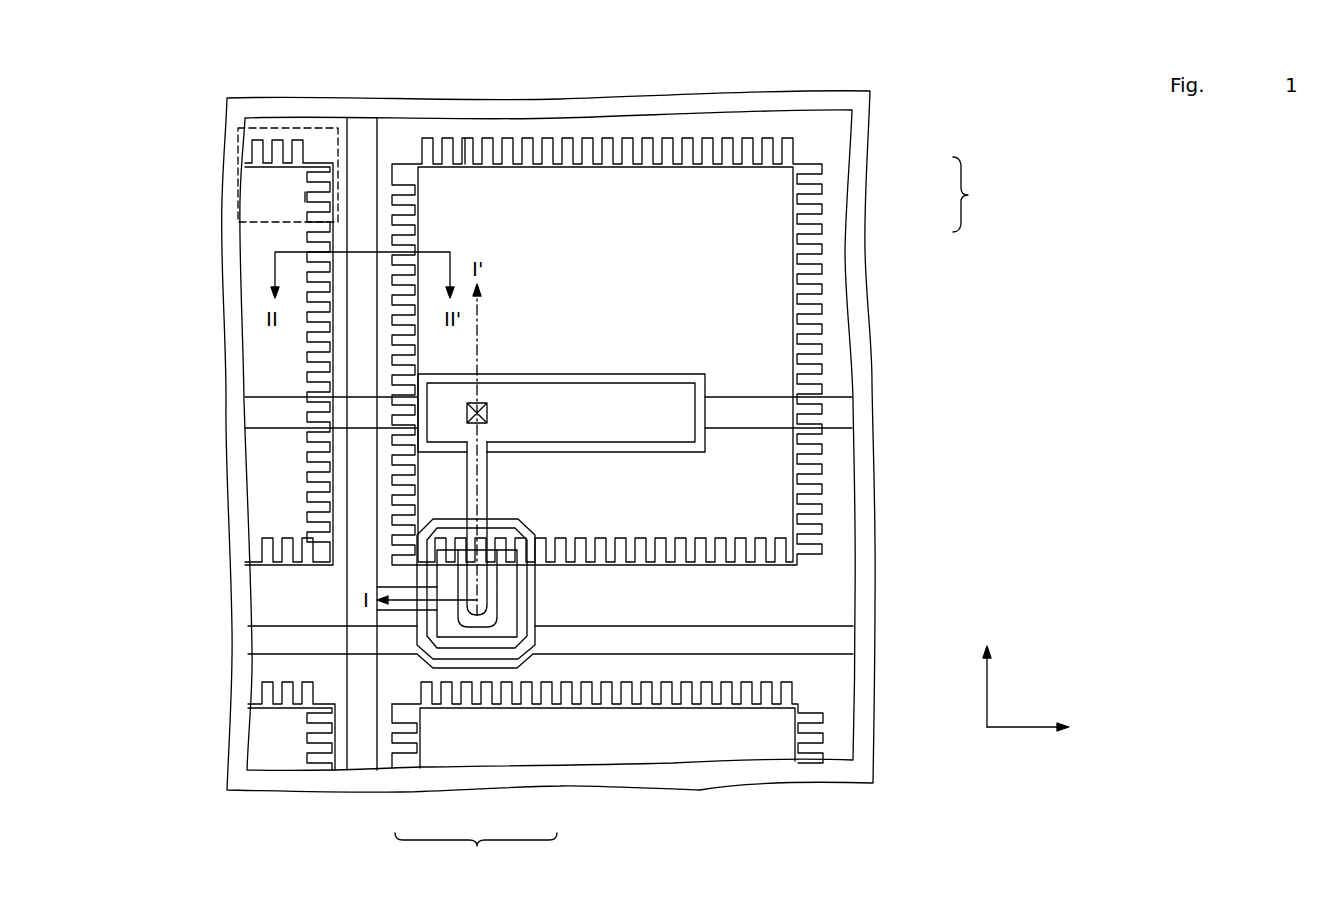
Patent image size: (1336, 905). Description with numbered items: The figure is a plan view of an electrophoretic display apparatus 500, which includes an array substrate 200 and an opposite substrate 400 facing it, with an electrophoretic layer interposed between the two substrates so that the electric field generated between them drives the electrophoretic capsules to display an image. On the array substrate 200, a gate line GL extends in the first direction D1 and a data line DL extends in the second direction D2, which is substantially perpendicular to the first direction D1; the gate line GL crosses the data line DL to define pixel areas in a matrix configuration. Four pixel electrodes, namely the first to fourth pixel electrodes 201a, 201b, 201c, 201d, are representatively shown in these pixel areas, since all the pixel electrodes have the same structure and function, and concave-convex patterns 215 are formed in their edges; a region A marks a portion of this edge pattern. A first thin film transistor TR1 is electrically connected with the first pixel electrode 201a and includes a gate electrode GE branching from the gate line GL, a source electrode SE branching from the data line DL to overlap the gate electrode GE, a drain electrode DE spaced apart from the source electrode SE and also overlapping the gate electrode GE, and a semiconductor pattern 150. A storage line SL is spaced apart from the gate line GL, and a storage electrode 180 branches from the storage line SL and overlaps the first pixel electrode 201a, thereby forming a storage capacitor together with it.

The electrophoretic display apparatus 500 is at (984, 194).
The opposite substrate 400 is at (872, 163).
The array substrate 200 is at (850, 218).
The first pixel electrode 201a is at (563, 140).
The second pixel electrode 201b is at (278, 140).
The third pixel electrode 201c is at (807, 762).
The fourth pixel electrode 201d is at (318, 770).
The concave-convex pattern 215 is at (466, 128).
The region A is at (331, 128).
The data line DL is at (362, 137).
The gate line GL is at (270, 643).
The storage line SL is at (835, 410).
The storage electrode 180 is at (620, 373).
The gate electrode GE is at (450, 670).
The source electrode SE is at (487, 650).
The drain electrode DE is at (478, 620).
The semiconductor pattern 150 is at (513, 662).
The first thin film transistor TR1 is at (476, 854).
The first direction D1 is at (1044, 728).
The second direction D2 is at (989, 674).